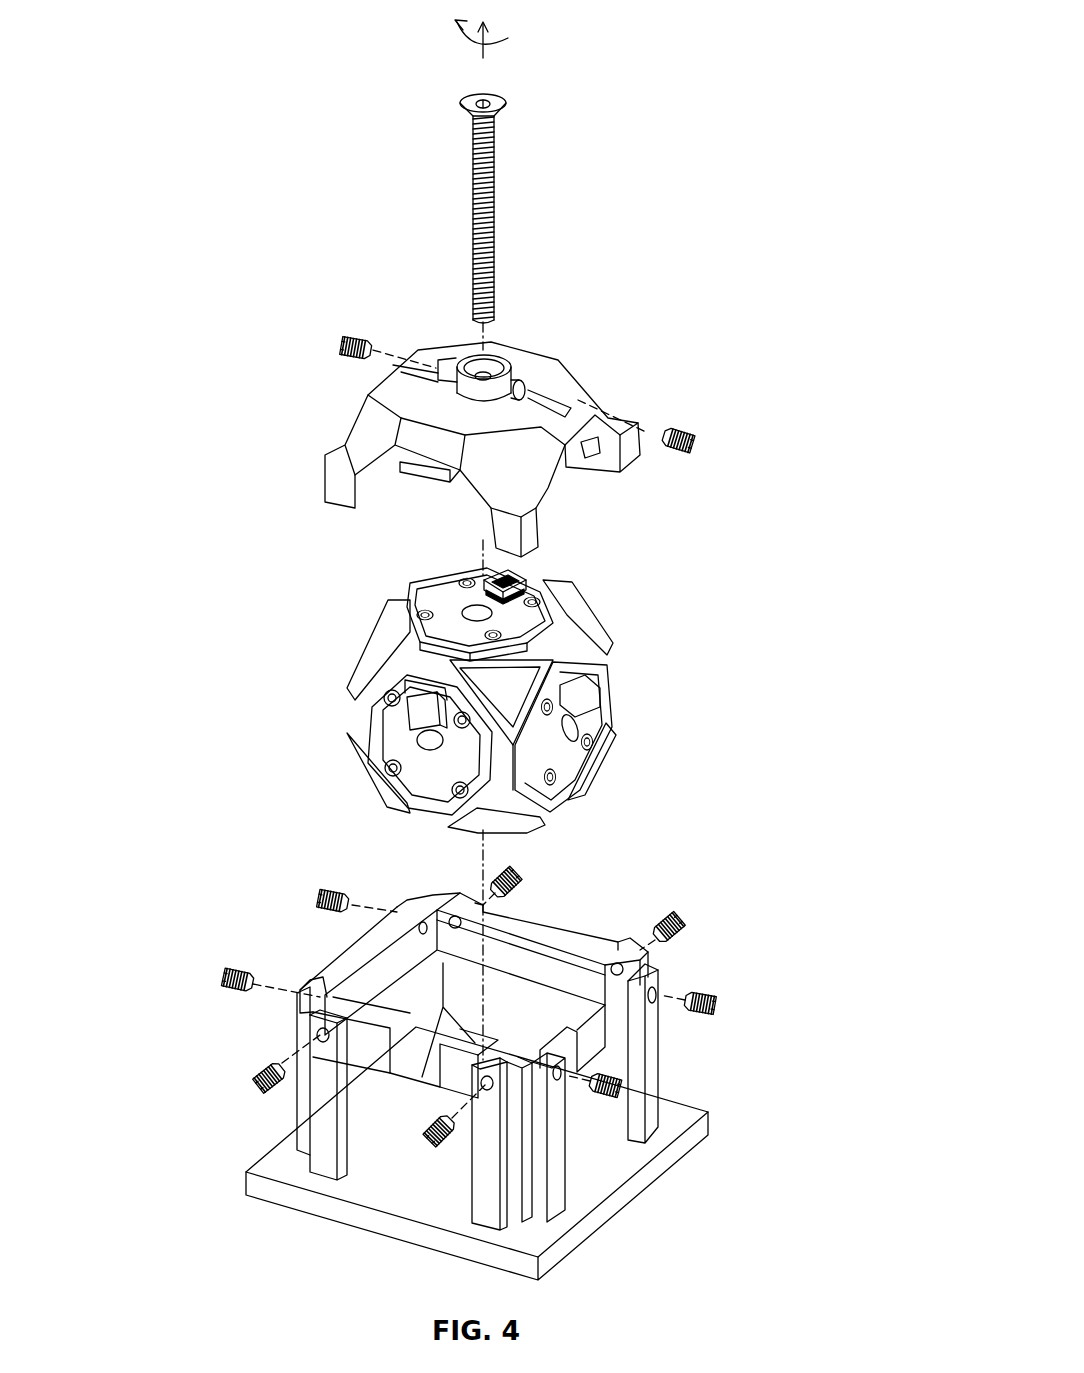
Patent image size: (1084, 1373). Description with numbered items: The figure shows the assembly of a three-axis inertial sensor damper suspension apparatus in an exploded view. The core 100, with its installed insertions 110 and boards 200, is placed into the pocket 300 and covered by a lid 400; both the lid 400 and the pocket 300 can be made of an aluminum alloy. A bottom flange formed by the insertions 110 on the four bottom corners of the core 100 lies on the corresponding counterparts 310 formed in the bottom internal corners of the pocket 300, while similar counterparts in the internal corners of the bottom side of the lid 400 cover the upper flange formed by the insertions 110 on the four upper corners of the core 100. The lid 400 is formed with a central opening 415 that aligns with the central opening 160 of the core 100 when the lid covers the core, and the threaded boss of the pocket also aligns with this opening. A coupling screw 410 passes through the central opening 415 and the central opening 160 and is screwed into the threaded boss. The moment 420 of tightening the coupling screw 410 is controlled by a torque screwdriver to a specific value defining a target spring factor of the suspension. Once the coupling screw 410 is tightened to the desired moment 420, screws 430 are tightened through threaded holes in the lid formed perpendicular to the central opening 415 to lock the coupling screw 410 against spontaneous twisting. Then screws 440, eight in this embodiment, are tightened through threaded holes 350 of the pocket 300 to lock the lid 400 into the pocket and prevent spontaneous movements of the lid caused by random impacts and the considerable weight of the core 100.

The core 100 is at (520, 684).
The insertions 110 is at (575, 627).
The central opening of the core 160 is at (450, 580).
The boards 200 is at (580, 765).
The pocket 300 is at (628, 1192).
The counterparts 310 is at (443, 1033).
The threaded holes 350 is at (665, 990).
The lid 400 is at (485, 423).
The coupling screw 410 is at (497, 148).
The central opening of the lid 415 is at (468, 354).
The moment 420 is at (563, 33).
The screws 430 is at (695, 430).
The screws 440 is at (690, 916).